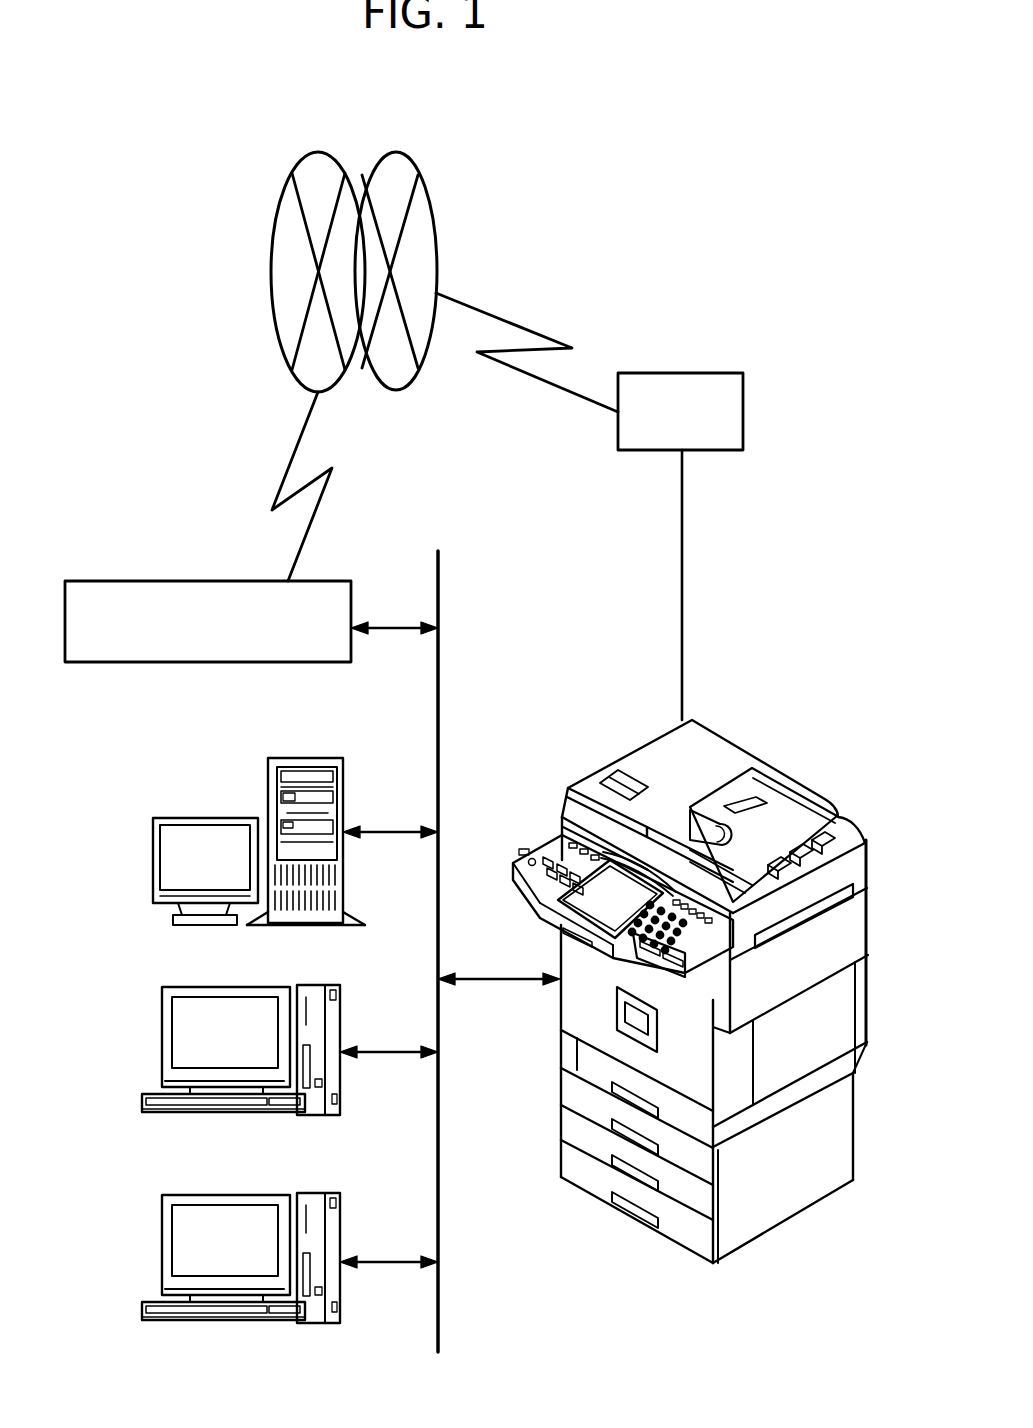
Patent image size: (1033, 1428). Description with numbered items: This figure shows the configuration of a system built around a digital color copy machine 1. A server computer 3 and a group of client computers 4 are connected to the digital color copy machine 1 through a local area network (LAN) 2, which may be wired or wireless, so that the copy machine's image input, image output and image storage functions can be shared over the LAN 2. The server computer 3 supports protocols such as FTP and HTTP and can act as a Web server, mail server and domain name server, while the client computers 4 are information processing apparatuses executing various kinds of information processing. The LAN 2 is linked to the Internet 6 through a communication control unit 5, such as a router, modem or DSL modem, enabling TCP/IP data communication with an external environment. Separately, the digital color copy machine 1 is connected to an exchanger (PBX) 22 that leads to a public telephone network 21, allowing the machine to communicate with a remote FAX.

The digital color copy machine 1 is at (828, 802).
The local area network (LAN) 2 is at (438, 692).
The server computer 3 is at (268, 783).
The client computers 4 is at (112, 987).
The communication control unit 5 is at (65, 598).
The Internet 6 is at (272, 250).
The public telephone network 21 is at (431, 210).
The exchanger (PBX) 22 is at (743, 390).